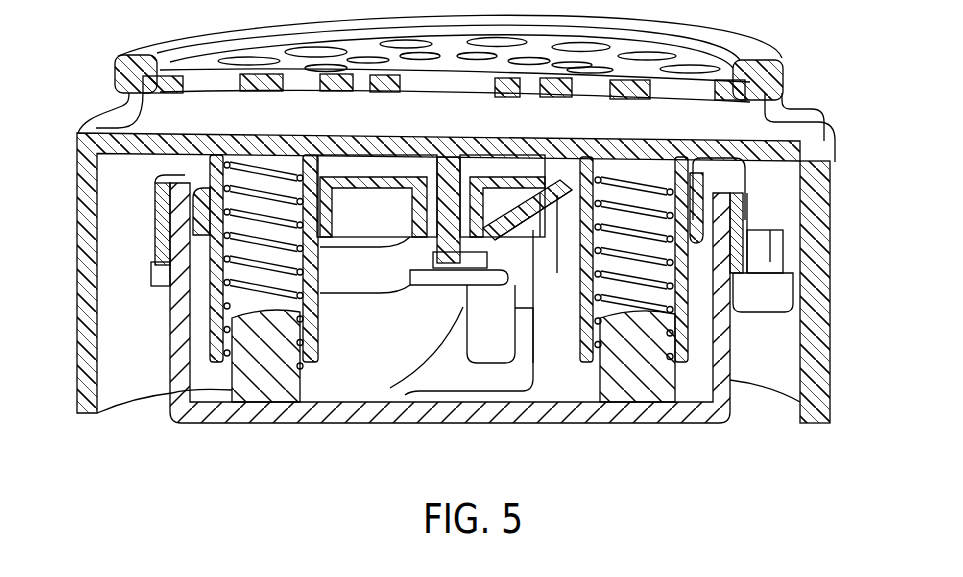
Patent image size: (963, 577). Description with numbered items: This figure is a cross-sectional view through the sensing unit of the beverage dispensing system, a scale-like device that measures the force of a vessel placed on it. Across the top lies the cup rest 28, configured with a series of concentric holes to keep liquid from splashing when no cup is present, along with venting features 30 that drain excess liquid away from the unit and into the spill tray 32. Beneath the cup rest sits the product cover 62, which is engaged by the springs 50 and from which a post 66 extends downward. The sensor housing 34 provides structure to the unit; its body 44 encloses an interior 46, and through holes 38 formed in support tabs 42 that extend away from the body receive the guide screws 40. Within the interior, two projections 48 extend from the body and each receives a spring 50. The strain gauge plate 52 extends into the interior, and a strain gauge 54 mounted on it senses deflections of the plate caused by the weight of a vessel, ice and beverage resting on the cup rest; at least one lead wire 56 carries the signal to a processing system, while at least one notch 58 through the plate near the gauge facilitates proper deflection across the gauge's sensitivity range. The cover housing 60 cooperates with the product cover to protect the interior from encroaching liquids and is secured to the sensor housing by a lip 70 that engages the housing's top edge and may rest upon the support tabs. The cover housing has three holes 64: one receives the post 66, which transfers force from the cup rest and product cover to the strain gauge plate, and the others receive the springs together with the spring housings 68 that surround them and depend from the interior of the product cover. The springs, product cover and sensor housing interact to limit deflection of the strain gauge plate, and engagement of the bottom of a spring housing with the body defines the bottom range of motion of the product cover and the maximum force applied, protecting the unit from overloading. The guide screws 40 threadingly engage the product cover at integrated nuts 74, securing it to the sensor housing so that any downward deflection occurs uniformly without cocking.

The cup rest 28 is at (773, 82).
The venting features 30 is at (80, 134).
The spill tray 32 is at (168, 211).
The sensor housing 34 is at (742, 406).
The through holes 38 is at (767, 241).
The guide screw 40 is at (793, 197).
The support tabs 42 is at (157, 276).
The body 44 is at (173, 410).
The interior 46 is at (384, 362).
The projection 48 is at (297, 372).
The spring 50 is at (306, 268).
The strain gauge plate 52 is at (477, 282).
The strain gauge 54 is at (477, 273).
The lead wire 56 is at (540, 232).
The notch 58 is at (430, 257).
The cover housing 60 is at (160, 228).
The product cover 62 is at (85, 200).
The holes 64 is at (340, 203).
The post 66 is at (443, 173).
The spring housing 68 is at (248, 136).
The lip 70 is at (170, 190).
The integrated nuts 74 is at (830, 185).